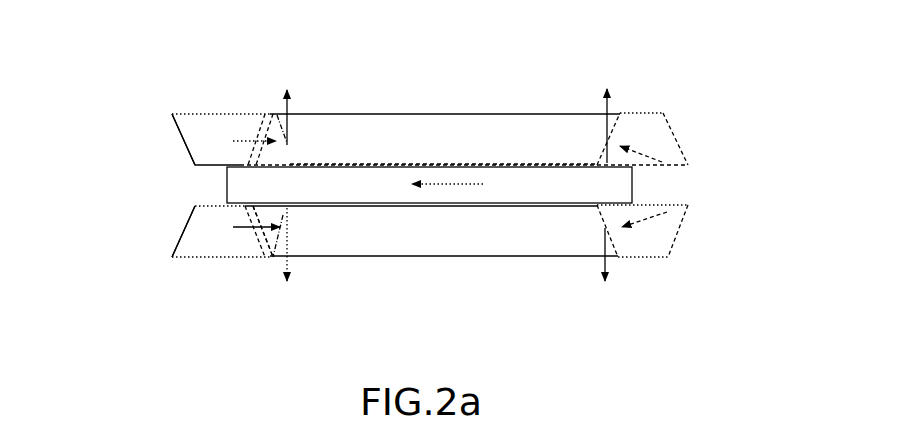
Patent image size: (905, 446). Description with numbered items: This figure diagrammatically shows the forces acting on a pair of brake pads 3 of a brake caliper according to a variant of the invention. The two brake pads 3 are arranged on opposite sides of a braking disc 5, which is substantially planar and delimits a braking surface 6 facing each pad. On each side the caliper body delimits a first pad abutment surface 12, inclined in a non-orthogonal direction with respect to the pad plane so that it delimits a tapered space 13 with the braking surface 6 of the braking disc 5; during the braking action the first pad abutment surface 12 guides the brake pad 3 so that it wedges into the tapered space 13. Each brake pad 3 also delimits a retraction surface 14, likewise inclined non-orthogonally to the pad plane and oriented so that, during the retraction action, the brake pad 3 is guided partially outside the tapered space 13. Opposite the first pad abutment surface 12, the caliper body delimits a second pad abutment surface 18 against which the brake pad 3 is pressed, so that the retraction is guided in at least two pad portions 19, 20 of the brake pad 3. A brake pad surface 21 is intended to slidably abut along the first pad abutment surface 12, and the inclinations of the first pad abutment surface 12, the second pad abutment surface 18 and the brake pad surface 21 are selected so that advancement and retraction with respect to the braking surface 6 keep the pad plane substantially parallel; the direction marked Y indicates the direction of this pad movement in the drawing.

The brake pad 3 is at (442, 150).
The braking disc 5 is at (566, 193).
The braking surface 6 is at (538, 165).
The first pad abutment surface 12 is at (265, 114).
The tapered space 13 is at (242, 160).
The retraction surface 14 is at (290, 160).
The second pad abutment surface 18 is at (617, 125).
The pad portion 19 is at (338, 99).
The pad portion 20 is at (589, 92).
The brake pad surface 21 is at (261, 250).
The direction Y is at (250, 128).